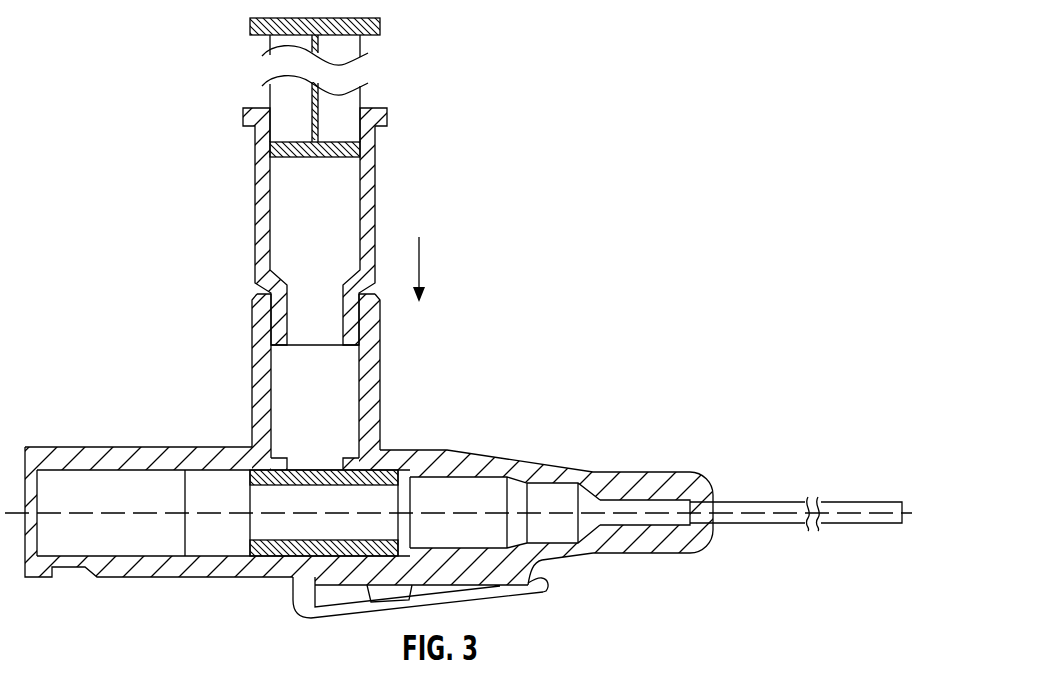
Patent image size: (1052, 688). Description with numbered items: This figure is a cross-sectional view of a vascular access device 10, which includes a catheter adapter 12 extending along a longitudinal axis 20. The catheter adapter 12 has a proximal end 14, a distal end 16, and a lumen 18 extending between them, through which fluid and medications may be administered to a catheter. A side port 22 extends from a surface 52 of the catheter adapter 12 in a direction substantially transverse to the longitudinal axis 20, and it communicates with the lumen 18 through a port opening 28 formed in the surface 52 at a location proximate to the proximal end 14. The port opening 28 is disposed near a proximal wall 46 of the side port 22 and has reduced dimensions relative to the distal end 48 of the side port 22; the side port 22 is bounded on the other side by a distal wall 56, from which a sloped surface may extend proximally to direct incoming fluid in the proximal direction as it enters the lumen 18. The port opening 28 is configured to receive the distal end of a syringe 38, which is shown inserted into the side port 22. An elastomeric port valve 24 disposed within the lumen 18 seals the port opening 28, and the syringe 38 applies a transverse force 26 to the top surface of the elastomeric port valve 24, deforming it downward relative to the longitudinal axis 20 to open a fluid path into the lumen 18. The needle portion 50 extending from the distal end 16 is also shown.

The vascular access device 10 is at (557, 201).
The catheter adapter 12 is at (519, 441).
The proximal end 14 is at (53, 463).
The distal end 16 is at (701, 482).
The lumen 18 is at (145, 495).
The longitudinal axis 20 is at (83, 512).
The side port 22 is at (258, 310).
The elastomeric port valve 24 is at (266, 448).
The transverse force 26 is at (420, 265).
The port opening 28 is at (314, 464).
The syringe 38 is at (254, 214).
The proximal wall 46 is at (251, 364).
The distal end 48 is at (381, 450).
The needle 50 is at (763, 508).
The surface 52 is at (478, 462).
The distal wall 56 is at (377, 352).